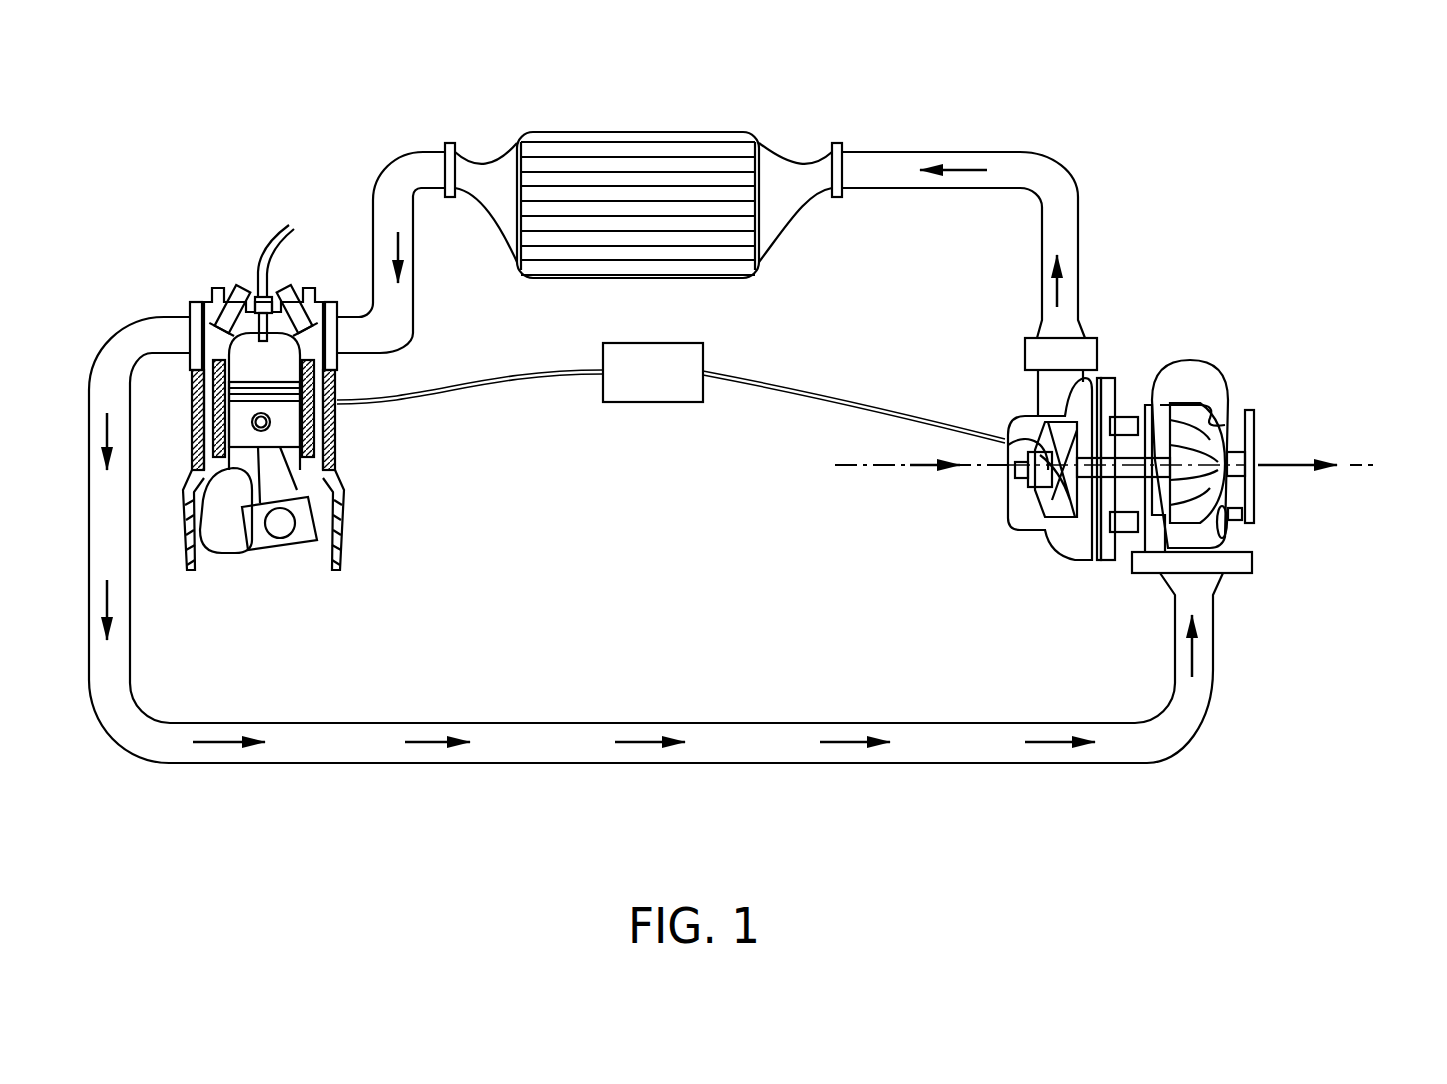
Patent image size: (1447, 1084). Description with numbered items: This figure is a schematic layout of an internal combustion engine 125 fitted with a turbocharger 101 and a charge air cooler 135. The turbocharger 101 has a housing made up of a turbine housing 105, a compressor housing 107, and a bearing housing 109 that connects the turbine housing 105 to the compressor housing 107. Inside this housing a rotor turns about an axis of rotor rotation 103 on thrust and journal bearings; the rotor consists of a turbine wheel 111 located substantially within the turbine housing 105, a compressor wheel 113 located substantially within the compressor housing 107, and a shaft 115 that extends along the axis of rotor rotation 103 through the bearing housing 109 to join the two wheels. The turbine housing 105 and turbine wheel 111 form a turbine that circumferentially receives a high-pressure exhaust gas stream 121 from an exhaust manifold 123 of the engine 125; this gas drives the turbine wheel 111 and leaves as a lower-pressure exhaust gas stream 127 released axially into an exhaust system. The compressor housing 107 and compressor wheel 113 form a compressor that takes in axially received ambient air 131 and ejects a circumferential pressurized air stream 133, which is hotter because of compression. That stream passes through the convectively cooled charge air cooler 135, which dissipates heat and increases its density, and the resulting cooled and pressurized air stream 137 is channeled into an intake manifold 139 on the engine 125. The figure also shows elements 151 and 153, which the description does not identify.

The turbocharger 101 is at (1123, 433).
The axis of rotor rotation 103 is at (1362, 468).
The turbine housing 105 is at (1193, 380).
The compressor housing 107 is at (1005, 425).
The bearing housing 109 is at (1125, 418).
The turbine wheel 111 is at (1198, 452).
The compressor wheel 113 is at (1068, 488).
The shaft 115 is at (1102, 555).
The high-pressure exhaust gas stream 121 is at (843, 746).
The exhaust manifold 123 is at (297, 378).
The internal combustion engine 125 is at (283, 422).
The lower-pressure exhaust gas stream 127 is at (1300, 465).
The ambient air 131 is at (920, 465).
The pressurized air stream 133 is at (958, 170).
The charge air cooler 135 is at (625, 158).
The cooled and pressurized air stream 137 is at (385, 248).
The intake manifold 139 is at (333, 343).
The ECU 151 is at (643, 402).
The signal line 153 is at (735, 378).